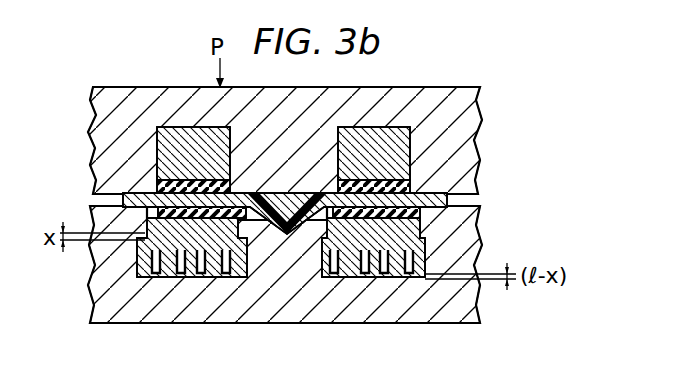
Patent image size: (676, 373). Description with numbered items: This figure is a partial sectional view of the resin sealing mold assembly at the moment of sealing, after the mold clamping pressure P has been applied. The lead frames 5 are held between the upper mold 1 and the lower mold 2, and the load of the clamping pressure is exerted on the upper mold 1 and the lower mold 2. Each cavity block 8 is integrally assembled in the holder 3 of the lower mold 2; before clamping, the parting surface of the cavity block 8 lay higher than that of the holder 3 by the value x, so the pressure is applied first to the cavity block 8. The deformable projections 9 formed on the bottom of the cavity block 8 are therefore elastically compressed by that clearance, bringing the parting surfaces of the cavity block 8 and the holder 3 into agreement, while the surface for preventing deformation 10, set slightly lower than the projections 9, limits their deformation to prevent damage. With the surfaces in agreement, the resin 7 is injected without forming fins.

The upper mold 1 is at (486, 118).
The lower mold 2 is at (486, 306).
The holder 3 is at (465, 318).
The lead frames 5 is at (123, 193).
The resin 7 is at (143, 212).
The cavity block 8 is at (420, 222).
The projection for deformation 9 is at (168, 277).
The surface for preventing deformation 10 is at (188, 277).